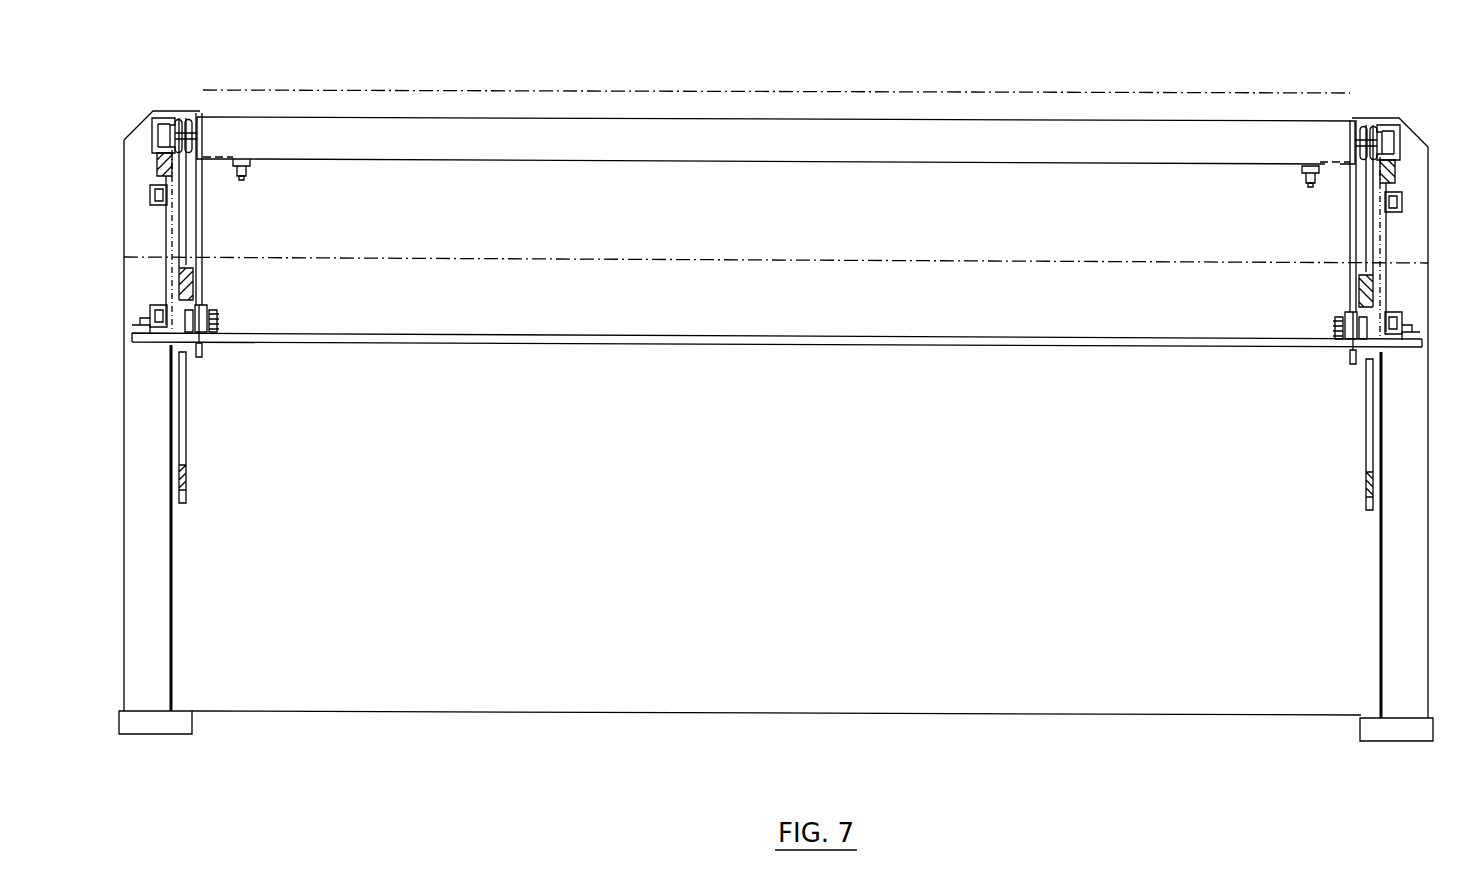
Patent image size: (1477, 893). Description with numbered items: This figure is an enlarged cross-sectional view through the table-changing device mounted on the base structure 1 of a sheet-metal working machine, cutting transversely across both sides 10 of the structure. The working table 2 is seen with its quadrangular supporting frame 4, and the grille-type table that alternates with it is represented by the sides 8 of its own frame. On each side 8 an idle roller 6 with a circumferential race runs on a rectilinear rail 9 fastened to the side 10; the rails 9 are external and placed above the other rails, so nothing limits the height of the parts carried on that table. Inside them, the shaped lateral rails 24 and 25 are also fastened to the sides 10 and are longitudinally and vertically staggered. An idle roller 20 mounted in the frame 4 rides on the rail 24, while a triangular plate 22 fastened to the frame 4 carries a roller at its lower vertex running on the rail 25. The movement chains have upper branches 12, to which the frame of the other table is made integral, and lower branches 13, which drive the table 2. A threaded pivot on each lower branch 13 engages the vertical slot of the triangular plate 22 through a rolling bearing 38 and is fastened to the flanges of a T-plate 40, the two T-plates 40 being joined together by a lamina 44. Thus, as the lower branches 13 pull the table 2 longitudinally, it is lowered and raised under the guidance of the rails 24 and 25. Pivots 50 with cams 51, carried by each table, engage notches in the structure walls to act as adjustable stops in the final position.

The base structure 1 is at (1432, 513).
The working table 2 is at (833, 93).
The supporting frame 4 is at (683, 128).
The idle rollers 6 is at (165, 135).
The sides 8 is at (200, 130).
The rectilinear rails 9 is at (162, 162).
The sides 10 is at (170, 635).
The upper branches 12 is at (158, 206).
The lower branches 13 is at (155, 308).
The idle rollers 20 is at (178, 120).
The triangular plates 22 is at (202, 272).
The shaped lateral rail 24 is at (188, 232).
The shaped lateral rail 25 is at (184, 407).
The rolling bearing 38 is at (217, 333).
The T-plate 40 is at (160, 343).
The lamina 44 is at (684, 346).
The pivots 50 is at (244, 160).
The cams 51 is at (246, 176).